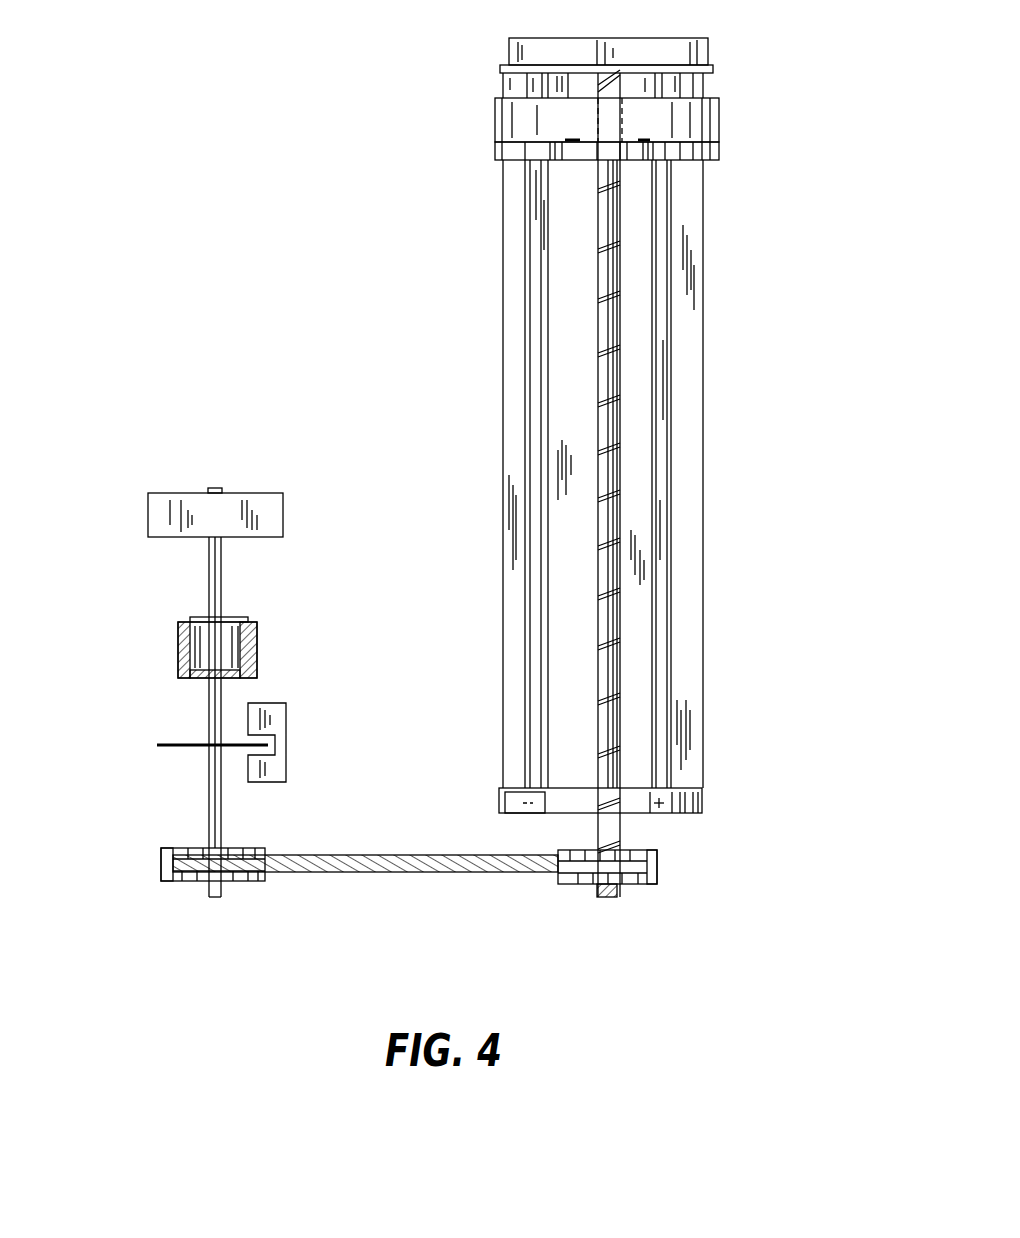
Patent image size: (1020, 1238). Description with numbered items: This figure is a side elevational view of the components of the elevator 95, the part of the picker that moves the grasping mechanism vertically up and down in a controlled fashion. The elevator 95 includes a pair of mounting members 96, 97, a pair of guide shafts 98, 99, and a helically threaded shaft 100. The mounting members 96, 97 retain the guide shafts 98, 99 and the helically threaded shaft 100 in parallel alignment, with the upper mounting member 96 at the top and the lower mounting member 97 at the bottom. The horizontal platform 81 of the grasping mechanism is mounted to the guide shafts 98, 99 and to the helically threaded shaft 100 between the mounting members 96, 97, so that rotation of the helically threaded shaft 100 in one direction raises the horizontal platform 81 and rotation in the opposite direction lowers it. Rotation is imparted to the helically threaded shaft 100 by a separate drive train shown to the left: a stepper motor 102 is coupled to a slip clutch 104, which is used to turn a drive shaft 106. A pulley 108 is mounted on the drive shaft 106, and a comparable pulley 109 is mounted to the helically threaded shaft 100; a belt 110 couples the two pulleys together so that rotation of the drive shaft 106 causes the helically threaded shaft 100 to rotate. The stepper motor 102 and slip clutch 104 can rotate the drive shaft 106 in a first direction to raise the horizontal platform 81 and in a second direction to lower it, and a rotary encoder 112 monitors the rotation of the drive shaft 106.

The horizontal platform 81 is at (719, 118).
The elevator 95 is at (775, 373).
The mounting member 96 is at (707, 42).
The mounting member 97 is at (700, 808).
The guide shaft 98 is at (665, 252).
The guide shaft 99 is at (530, 258).
The helically threaded shaft 100 is at (613, 323).
The stepper motor 102 is at (170, 502).
The slip clutch 104 is at (257, 652).
The drive shaft 106 is at (209, 716).
The pulley 108 is at (185, 881).
The pulley 109 is at (635, 883).
The belt 110 is at (470, 868).
The rotary encoder 112 is at (288, 746).